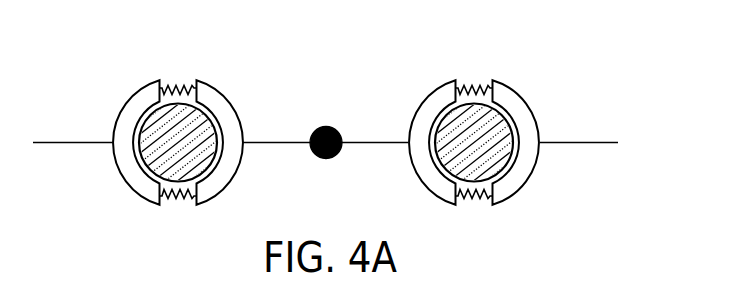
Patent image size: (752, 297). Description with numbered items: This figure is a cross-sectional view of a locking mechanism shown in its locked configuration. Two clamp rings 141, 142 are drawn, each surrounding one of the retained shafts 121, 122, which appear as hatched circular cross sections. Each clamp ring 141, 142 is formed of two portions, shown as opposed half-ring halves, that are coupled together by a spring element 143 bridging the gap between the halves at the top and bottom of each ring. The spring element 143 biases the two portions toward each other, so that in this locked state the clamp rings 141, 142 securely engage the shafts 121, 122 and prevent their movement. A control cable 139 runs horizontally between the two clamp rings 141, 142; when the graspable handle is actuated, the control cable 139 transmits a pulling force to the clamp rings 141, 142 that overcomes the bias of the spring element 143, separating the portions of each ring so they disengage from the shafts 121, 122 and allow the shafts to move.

The retained shaft 121 is at (493, 150).
The retained shaft 122 is at (167, 140).
The control cable 139 is at (378, 142).
The clamp ring 141 is at (518, 108).
The clamp ring 142 is at (220, 107).
The spring element 143 is at (173, 80).